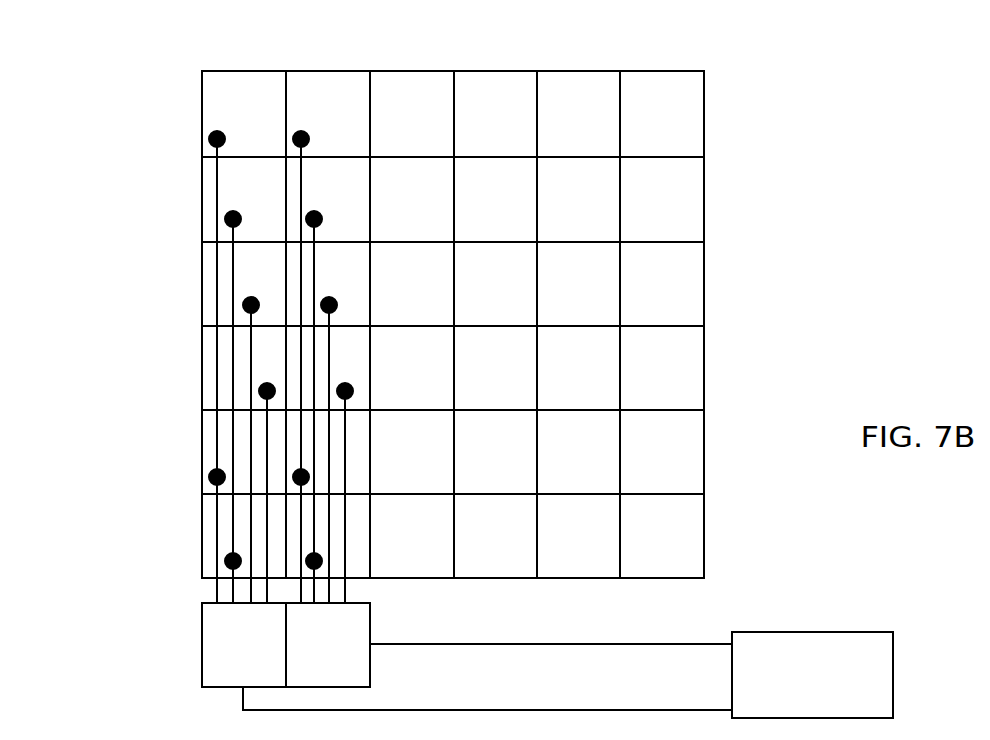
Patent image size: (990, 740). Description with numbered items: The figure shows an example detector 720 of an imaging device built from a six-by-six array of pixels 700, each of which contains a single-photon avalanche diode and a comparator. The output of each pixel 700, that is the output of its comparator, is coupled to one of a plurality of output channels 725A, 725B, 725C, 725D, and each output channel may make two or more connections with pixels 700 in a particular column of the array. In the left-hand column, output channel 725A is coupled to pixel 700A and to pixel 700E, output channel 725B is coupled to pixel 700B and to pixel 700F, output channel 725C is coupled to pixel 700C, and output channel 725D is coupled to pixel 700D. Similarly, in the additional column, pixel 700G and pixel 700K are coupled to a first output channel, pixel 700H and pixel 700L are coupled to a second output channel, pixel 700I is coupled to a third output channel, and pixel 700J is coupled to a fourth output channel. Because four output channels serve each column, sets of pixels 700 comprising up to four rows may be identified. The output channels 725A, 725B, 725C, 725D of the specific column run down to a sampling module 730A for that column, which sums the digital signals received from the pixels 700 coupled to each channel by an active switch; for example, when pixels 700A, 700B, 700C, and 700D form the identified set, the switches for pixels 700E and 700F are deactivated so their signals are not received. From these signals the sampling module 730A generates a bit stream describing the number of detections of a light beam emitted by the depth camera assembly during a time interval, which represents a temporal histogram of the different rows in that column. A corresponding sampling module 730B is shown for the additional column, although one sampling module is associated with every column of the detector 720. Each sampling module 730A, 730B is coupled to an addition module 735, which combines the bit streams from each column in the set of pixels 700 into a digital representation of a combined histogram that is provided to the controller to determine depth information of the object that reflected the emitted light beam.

The detector 720 is at (263, 63).
The pixel 700 is at (392, 126).
The pixel 700A is at (217, 126).
The pixel 700B is at (217, 212).
The pixel 700C is at (217, 297).
The pixel 700D is at (217, 381).
The pixel 700E is at (217, 465).
The pixel 700F is at (217, 549).
The pixel 700G is at (301, 126).
The pixel 700H is at (301, 212).
The pixel 700I is at (305, 297).
The pixel 700J is at (303, 381).
The pixel 700K is at (301, 465).
The pixel 700L is at (303, 549).
The output channel 725A is at (218, 187).
The output channel 725B is at (232, 252).
The output channel 725C is at (253, 427).
The output channel 725D is at (273, 530).
The sampling module 730A is at (217, 656).
The sampling module 730B is at (301, 656).
The addition module 735 is at (794, 712).